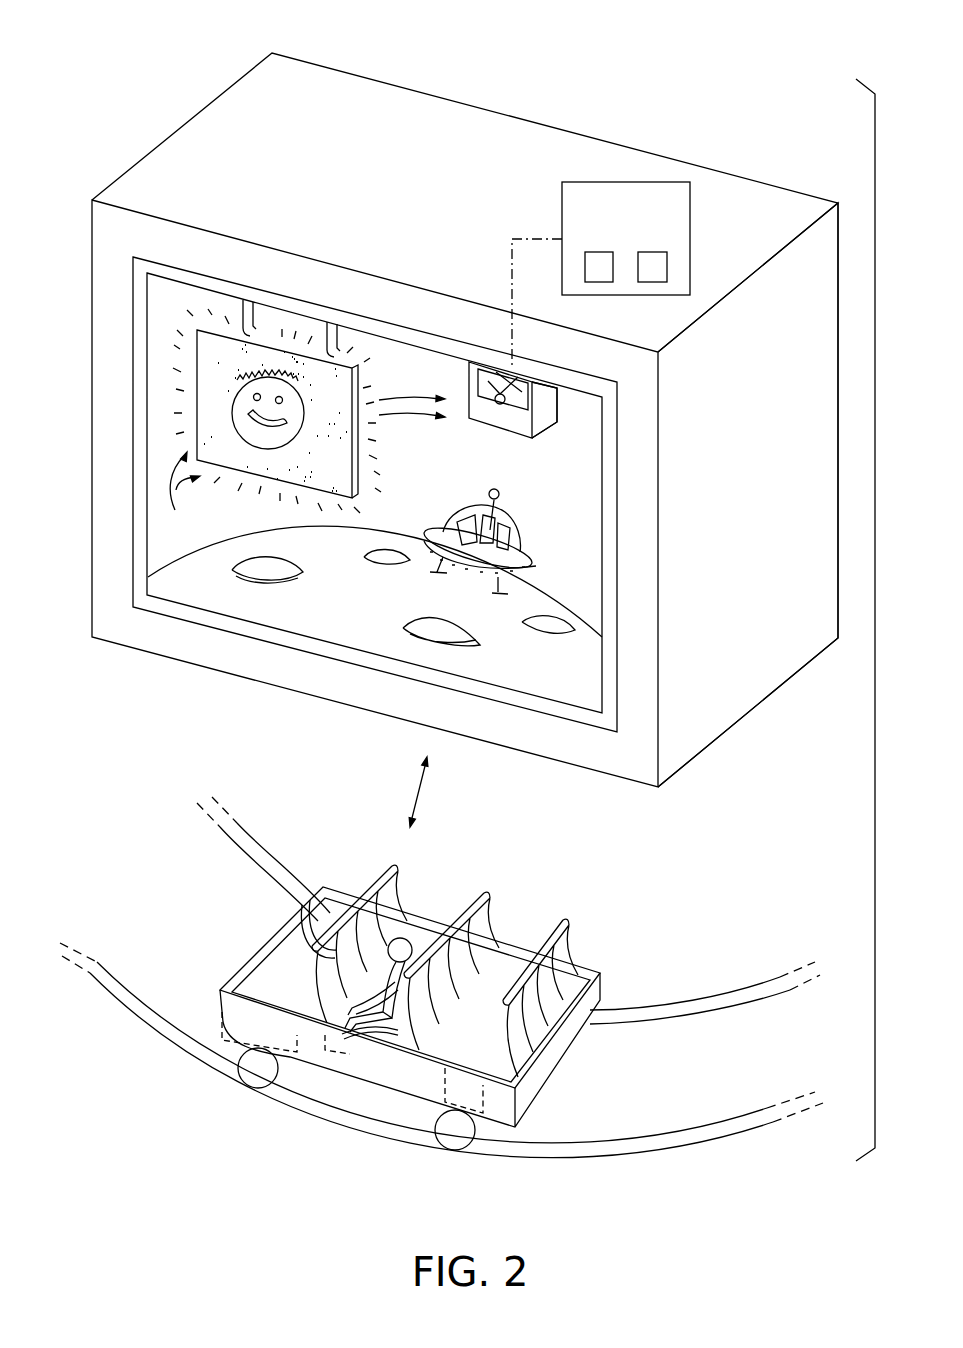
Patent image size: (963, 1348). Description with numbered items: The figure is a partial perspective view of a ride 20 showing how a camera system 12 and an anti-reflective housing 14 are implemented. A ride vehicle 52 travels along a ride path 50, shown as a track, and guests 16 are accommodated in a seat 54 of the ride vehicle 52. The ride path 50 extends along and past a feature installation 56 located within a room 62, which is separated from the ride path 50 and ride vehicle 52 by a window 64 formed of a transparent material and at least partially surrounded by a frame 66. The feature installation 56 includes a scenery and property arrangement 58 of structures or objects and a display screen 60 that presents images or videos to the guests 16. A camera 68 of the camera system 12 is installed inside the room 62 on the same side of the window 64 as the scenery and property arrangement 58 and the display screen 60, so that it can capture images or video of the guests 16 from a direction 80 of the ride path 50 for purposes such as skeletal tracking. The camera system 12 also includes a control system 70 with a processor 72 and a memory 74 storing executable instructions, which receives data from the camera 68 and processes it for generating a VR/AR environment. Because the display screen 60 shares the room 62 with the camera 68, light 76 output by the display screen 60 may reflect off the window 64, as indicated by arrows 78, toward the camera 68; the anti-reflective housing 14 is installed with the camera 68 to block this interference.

The ride 20 is at (80, 70).
The feature installation 56 is at (170, 117).
The room 62 is at (829, 306).
The frame 66 is at (607, 594).
The control system 70 is at (627, 182).
The processor 72 is at (598, 282).
The memory 74 is at (651, 282).
The camera system 12 is at (487, 253).
The camera 68 is at (493, 367).
The anti-reflective housing 14 is at (548, 415).
The arrows 78 is at (399, 385).
The display screen 60 is at (197, 398).
The light 76 is at (179, 495).
The window 64 is at (552, 655).
The scenery and property arrangement 58 is at (418, 522).
The direction 80 is at (420, 790).
The ride path 50 is at (562, 1152).
The ride vehicle 52 is at (268, 955).
The guests 16 is at (406, 940).
The seat 54 is at (397, 1033).